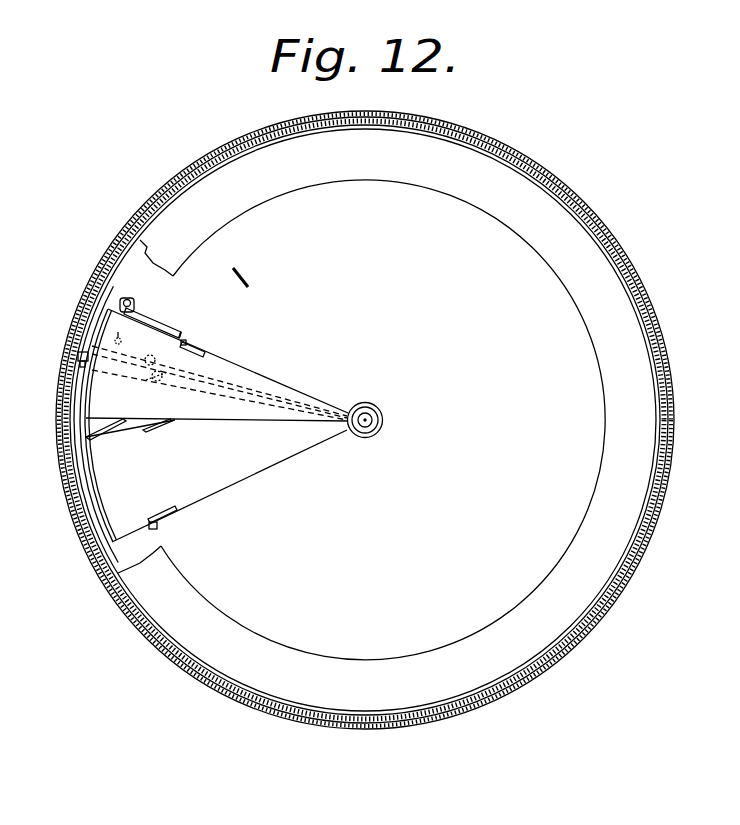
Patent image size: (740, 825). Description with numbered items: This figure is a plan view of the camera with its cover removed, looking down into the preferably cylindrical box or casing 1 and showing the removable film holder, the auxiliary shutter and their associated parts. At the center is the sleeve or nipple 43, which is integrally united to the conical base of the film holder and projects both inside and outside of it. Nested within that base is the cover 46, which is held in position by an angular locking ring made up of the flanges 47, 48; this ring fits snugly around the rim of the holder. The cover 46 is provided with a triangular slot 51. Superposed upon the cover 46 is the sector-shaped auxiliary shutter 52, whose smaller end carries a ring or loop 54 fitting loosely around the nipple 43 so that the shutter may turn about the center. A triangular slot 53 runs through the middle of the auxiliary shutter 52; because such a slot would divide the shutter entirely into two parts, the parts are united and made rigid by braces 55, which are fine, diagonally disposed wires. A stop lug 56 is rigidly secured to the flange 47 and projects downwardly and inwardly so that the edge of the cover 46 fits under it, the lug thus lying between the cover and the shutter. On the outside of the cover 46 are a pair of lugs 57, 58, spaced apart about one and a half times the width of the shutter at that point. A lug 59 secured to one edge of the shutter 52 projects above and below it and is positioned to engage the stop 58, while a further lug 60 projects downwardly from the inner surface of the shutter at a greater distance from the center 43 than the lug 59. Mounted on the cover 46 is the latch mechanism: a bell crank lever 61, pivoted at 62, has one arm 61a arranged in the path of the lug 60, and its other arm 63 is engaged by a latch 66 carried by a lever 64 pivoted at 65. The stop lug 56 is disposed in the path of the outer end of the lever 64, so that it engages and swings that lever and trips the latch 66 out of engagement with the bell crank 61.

The box or casing 1 is at (131, 626).
The sleeve or nipple 43 is at (371, 437).
The cover 46 is at (477, 574).
The flange of locking ring 47 is at (227, 638).
The flange of locking ring 48 is at (103, 557).
The triangular slot 51 is at (190, 390).
The auxiliary shutter 52 is at (252, 376).
The triangular slot 53 is at (197, 423).
The ring or loop 54 is at (379, 409).
The braces 55 is at (150, 430).
The stop lug 56 is at (80, 358).
The lug 57 is at (170, 521).
The lug or stop 58 is at (242, 272).
The lug 59 is at (197, 347).
The lug 60 is at (156, 378).
The bell crank lever 61 is at (143, 315).
The arm of bell crank lever 61a is at (178, 333).
The pivot 62 is at (129, 299).
The arm of bell crank lever 63 is at (97, 313).
The lever 64 is at (77, 333).
The pivot 65 is at (166, 354).
The latch 66 is at (120, 347).